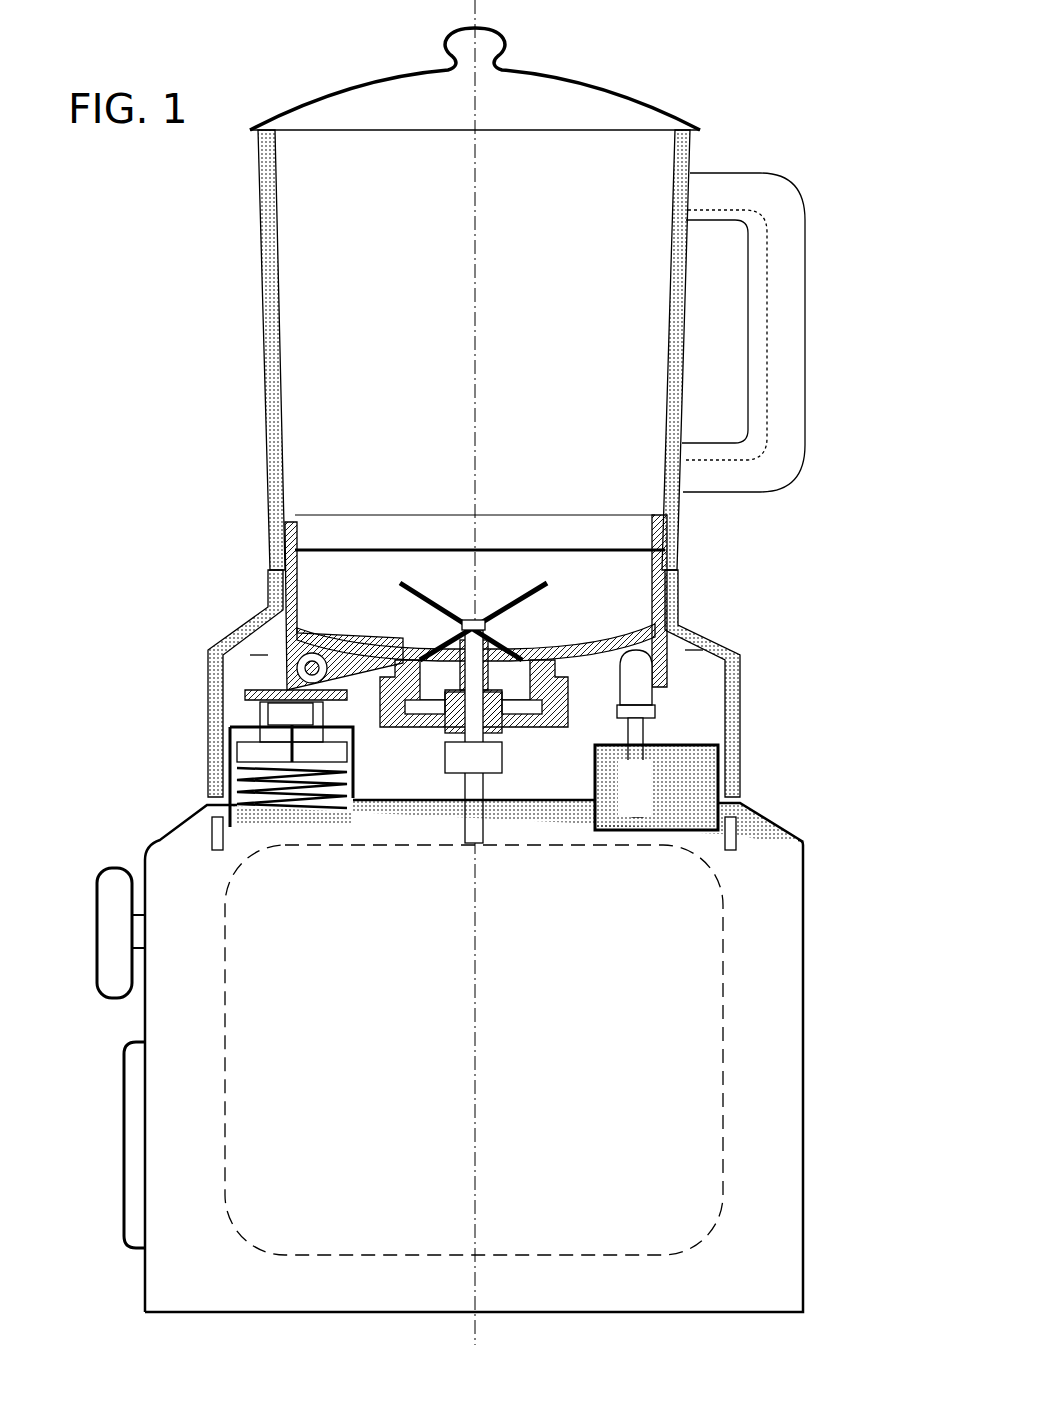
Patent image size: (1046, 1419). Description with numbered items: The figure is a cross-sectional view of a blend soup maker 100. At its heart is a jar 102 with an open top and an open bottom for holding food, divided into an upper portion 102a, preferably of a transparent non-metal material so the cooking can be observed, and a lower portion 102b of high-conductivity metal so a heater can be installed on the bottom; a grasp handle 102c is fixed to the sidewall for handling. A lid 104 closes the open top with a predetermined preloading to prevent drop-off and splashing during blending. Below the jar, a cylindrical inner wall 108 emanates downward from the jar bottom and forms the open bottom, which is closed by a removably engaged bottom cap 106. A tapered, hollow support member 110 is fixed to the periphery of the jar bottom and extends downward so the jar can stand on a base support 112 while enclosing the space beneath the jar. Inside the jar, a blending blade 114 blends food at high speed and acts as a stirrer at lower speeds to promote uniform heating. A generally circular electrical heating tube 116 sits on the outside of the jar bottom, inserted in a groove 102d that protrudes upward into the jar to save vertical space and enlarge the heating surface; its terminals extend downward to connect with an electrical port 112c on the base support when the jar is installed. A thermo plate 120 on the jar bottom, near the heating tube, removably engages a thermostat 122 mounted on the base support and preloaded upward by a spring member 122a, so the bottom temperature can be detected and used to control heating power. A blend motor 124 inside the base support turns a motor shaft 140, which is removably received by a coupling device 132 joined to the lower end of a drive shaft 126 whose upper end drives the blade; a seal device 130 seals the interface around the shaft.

The blend soup maker 100 is at (290, 78).
The jar 102 is at (483, 404).
The upper portion 102a is at (272, 325).
The lower portion 102b is at (668, 590).
The grasp handle 102c is at (760, 195).
The groove 102d is at (268, 603).
The lid 104 is at (655, 118).
The bottom cap 106 is at (480, 835).
The cylindrical inner wall 108 is at (378, 720).
The support member 110 is at (735, 715).
The base support 112 is at (450, 1028).
The electrical port 112c is at (640, 817).
The blending blade 114 is at (525, 600).
The electrical heating tube 116 is at (632, 668).
The thermo plate 120 is at (225, 650).
The thermostat 122 is at (215, 781).
The spring member 122a is at (312, 790).
The blend motor 124 is at (474, 1050).
The drive shaft 126 is at (472, 600).
The seal device 130 is at (510, 562).
The coupling device 132 is at (520, 780).
The motor shaft 140 is at (474, 821).